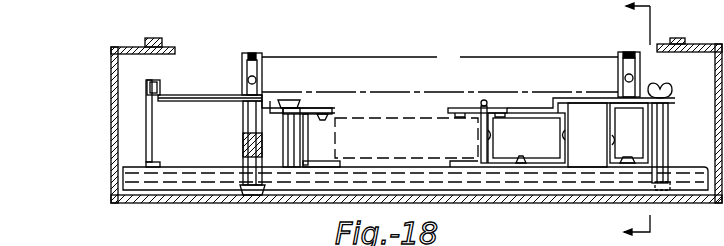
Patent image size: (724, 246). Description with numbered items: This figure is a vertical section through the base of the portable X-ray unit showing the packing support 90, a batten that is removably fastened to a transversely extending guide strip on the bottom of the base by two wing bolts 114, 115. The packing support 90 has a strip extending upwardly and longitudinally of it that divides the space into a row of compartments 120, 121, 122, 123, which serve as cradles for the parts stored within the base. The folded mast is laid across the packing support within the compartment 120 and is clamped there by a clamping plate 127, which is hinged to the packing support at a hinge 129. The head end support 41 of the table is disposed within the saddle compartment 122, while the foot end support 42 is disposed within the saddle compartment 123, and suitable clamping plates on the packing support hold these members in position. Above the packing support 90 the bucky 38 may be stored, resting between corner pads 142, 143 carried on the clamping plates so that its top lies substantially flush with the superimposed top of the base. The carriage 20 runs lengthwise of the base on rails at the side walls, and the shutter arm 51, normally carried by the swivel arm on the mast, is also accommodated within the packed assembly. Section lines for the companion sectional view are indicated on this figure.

The carriage 20 is at (617, 120).
The bucky 38 is at (467, 56).
The head end support 41 is at (520, 100).
The foot end support 42 is at (580, 152).
The shutter arm 51 is at (350, 110).
The packing support 90 is at (150, 141).
The wing bolt 114 is at (287, 100).
The wing bolt 115 is at (668, 125).
The compartment 120 is at (153, 118).
The compartment 121 is at (478, 117).
The compartment 122 is at (526, 138).
The compartment 123 is at (629, 133).
The clamping plate 127 is at (222, 72).
The hinge 129 is at (165, 72).
The corner pad 142 is at (256, 56).
The corner pad 143 is at (630, 52).